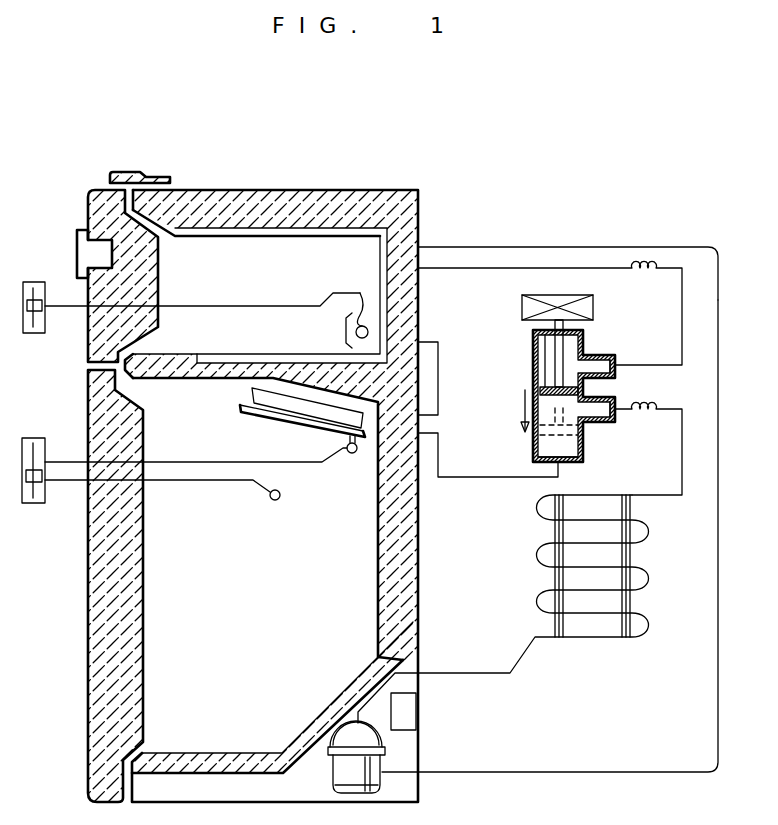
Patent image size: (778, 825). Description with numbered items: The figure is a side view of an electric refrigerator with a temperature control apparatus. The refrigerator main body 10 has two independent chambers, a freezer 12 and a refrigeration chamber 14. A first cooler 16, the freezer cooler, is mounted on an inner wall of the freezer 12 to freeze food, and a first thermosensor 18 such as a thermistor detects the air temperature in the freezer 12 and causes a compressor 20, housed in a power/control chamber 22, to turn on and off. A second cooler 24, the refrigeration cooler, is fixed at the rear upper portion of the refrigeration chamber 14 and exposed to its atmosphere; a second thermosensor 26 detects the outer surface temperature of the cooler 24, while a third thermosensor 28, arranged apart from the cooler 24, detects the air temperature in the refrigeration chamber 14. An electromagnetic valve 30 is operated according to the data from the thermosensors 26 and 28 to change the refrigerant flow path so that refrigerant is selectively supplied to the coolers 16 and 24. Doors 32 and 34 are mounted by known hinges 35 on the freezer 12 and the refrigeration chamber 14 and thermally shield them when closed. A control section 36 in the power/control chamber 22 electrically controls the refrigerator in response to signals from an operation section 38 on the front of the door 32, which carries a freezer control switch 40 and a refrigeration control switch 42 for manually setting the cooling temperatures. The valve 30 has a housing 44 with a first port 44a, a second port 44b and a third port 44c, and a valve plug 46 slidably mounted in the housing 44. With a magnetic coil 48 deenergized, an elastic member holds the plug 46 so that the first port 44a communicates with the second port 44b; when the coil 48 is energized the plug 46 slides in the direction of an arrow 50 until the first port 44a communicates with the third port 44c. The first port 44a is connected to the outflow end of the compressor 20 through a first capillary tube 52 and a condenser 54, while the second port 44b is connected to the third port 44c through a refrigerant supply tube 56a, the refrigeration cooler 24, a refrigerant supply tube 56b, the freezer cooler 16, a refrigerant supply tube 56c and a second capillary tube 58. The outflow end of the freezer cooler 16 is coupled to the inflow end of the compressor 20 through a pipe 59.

The refrigerator main body 10 is at (298, 190).
The freezer 12 is at (187, 253).
The refrigeration chamber 14 is at (362, 582).
The first cooler 16 is at (253, 232).
The first thermosensor 18 is at (368, 323).
The compressor 20 is at (345, 773).
The power/control chamber 22 is at (403, 752).
The second cooler 24 is at (257, 400).
The second thermosensor 26 is at (352, 453).
The third thermosensor 28 is at (276, 500).
The electromagnetic valve 30 is at (570, 393).
The door 32 is at (88, 207).
The door 34 is at (88, 645).
The hinges 35 is at (125, 172).
The control section 36 is at (403, 713).
The operation section 38 is at (78, 250).
The freezer control switch 40 is at (33, 333).
The refrigeration control switch 42 is at (33, 503).
The housing 44 is at (583, 340).
The first port 44a is at (615, 412).
The second port 44b is at (558, 463).
The third port 44c is at (617, 365).
The valve plug 46 is at (538, 343).
The magnetic coil 48 is at (593, 307).
The arrow 50 is at (520, 408).
The first capillary tube 52 is at (653, 387).
The condenser 54 is at (650, 634).
The refrigerant supply tube 56a is at (470, 480).
The refrigerant supply tube 56b is at (442, 362).
The refrigerant supply tube 56c is at (462, 268).
The second capillary tube 58 is at (663, 260).
The pipe 59 is at (718, 603).